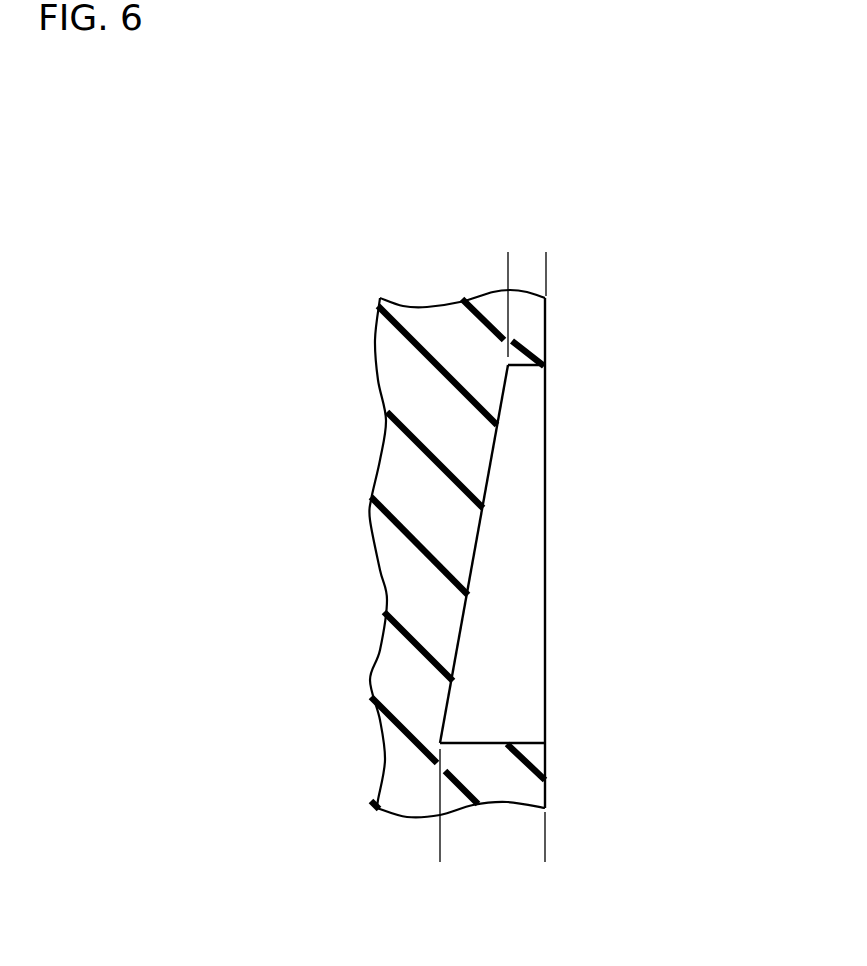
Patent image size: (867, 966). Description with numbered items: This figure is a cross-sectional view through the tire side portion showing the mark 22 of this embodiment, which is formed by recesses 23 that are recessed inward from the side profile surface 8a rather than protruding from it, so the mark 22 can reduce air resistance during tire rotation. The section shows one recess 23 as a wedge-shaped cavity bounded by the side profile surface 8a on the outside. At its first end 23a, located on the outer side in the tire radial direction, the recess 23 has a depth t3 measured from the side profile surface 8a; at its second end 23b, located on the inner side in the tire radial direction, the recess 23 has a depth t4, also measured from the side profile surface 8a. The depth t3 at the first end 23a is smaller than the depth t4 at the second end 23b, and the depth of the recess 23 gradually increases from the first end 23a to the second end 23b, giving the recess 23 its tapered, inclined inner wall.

The side profile surface 8a is at (557, 332).
The mark 22 is at (546, 479).
The recess 23 is at (512, 593).
The first end 23a is at (553, 365).
The second end 23b is at (551, 743).
The depth at first end t3 is at (587, 258).
The depth at second end t4 is at (545, 855).